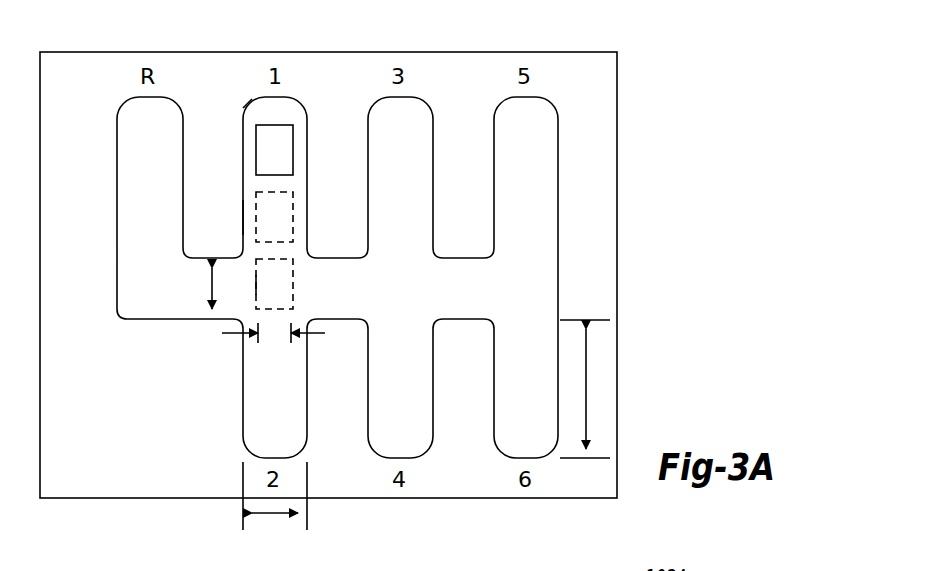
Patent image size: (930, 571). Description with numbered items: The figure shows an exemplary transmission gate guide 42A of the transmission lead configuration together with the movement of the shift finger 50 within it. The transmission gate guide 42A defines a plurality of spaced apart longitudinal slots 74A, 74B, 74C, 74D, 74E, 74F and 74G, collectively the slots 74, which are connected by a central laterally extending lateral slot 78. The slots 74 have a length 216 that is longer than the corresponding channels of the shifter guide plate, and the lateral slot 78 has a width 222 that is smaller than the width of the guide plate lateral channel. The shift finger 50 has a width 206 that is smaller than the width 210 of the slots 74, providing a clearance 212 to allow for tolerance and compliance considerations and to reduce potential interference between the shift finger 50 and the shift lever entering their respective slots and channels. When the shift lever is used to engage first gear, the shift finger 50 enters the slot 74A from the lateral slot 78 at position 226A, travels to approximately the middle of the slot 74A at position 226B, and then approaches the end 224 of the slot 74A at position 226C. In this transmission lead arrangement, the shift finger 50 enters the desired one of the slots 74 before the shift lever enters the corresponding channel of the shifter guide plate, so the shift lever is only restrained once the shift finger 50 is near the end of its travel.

The transmission gate guide 42A is at (607, 47).
The slots 74 is at (392, 287).
The slot 74A is at (300, 104).
The slot 74B is at (241, 446).
The slot 74C is at (426, 104).
The slot 74D is at (367, 437).
The slot 74E is at (552, 104).
The slot 74F is at (493, 437).
The slot 74G is at (173, 105).
The lateral slot 78 is at (463, 318).
The shift finger 50 is at (257, 285).
The width 206 is at (272, 334).
The width 210 is at (272, 518).
The clearance 212 is at (248, 217).
The length 216 is at (586, 388).
The width 222 is at (207, 292).
The end 224 is at (246, 108).
The position 226A is at (293, 285).
The position 226B is at (293, 216).
The position 226C is at (293, 148).